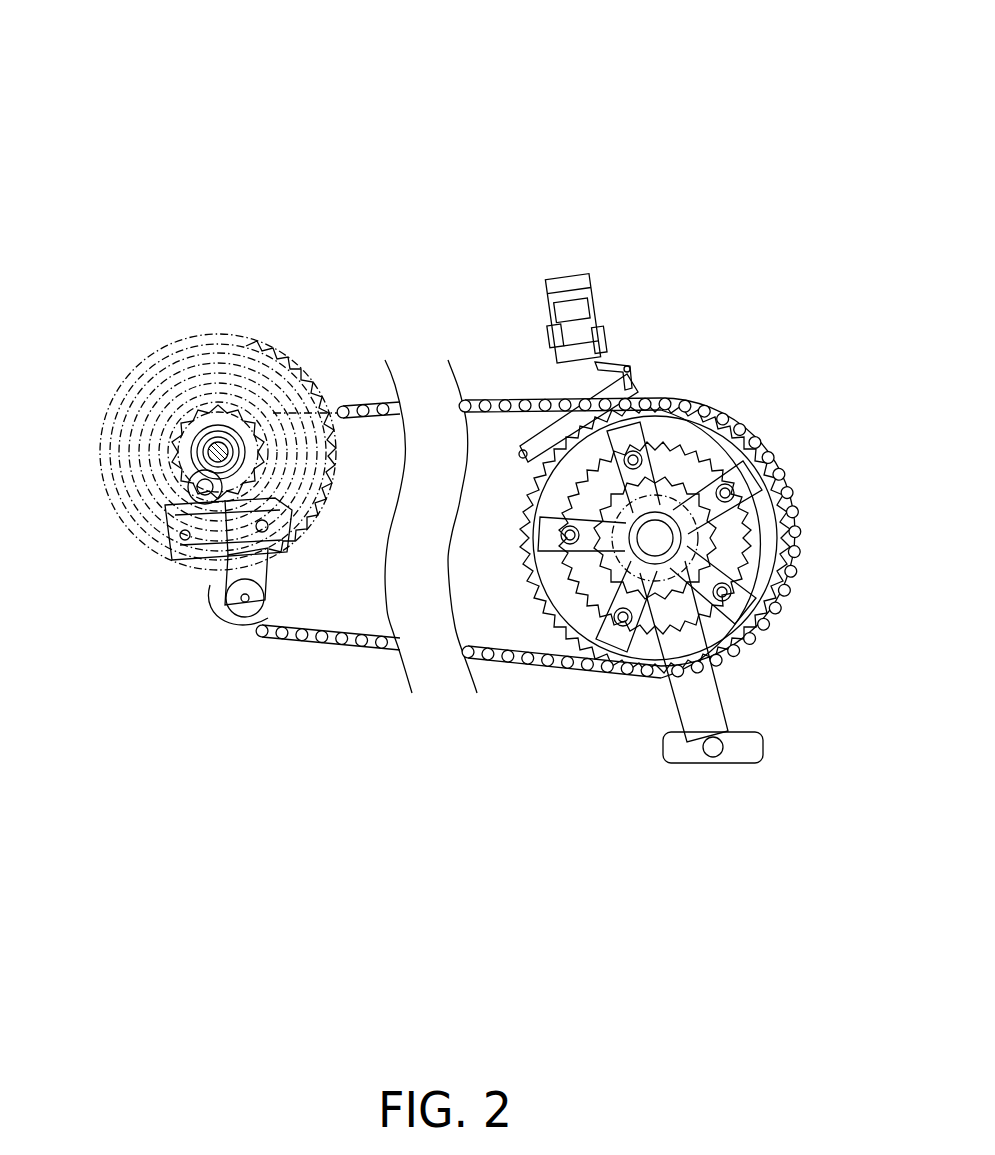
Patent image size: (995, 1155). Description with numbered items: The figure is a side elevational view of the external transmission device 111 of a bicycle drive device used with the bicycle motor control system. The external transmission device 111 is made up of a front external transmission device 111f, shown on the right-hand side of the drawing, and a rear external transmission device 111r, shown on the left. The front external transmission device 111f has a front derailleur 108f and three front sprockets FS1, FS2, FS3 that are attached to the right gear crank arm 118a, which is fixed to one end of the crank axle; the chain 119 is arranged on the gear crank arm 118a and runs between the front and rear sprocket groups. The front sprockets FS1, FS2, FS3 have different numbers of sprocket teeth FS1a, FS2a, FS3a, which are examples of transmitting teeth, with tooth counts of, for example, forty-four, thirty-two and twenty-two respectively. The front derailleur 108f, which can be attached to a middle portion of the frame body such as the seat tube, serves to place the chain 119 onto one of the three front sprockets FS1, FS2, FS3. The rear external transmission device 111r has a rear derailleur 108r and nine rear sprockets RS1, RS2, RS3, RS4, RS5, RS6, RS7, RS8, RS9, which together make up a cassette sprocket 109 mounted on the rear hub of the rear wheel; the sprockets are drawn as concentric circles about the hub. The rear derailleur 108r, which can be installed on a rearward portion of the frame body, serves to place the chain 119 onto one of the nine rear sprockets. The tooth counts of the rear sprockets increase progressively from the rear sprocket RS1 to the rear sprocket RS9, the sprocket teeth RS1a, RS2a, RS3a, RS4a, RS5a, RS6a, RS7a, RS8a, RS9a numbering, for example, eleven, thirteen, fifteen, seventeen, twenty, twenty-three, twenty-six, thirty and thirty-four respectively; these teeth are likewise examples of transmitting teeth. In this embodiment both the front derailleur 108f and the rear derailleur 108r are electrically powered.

The front derailleur 108f is at (590, 322).
The rear derailleur 108r is at (262, 455).
The cassette sprocket 109 is at (325, 378).
The external transmission device 111 is at (652, 132).
The rear external transmission device 111r is at (323, 330).
The front external transmission device 111f is at (575, 277).
The right gear crank arm 118a is at (748, 658).
The chain 119 is at (580, 675).
The front sprocket FS1 is at (542, 605).
The sprocket teeth FS1a is at (547, 678).
The front sprocket FS2 is at (720, 421).
The sprocket teeth FS2a is at (713, 457).
The front sprocket FS3 is at (687, 447).
The sprocket teeth FS3a is at (678, 467).
The rear sprocket RS1 is at (260, 510).
The rear sprocket RS2 is at (250, 512).
The rear sprocket RS3 is at (128, 452).
The rear sprocket RS4 is at (117, 452).
The rear sprocket RS5 is at (142, 447).
The rear sprocket RS6 is at (142, 418).
The rear sprocket RS7 is at (142, 398).
The rear sprocket RS8 is at (142, 370).
The rear sprocket RS9 is at (142, 352).
The sprocket teeth RS1a is at (190, 400).
The sprocket teeth RS2a is at (190, 411).
The sprocket teeth RS3a is at (203, 395).
The sprocket teeth RS4a is at (215, 383).
The sprocket teeth RS5a is at (232, 374).
The sprocket teeth RS6a is at (245, 370).
The sprocket teeth RS7a is at (258, 370).
The sprocket teeth RS8a is at (275, 370).
The sprocket teeth RS9a is at (293, 370).